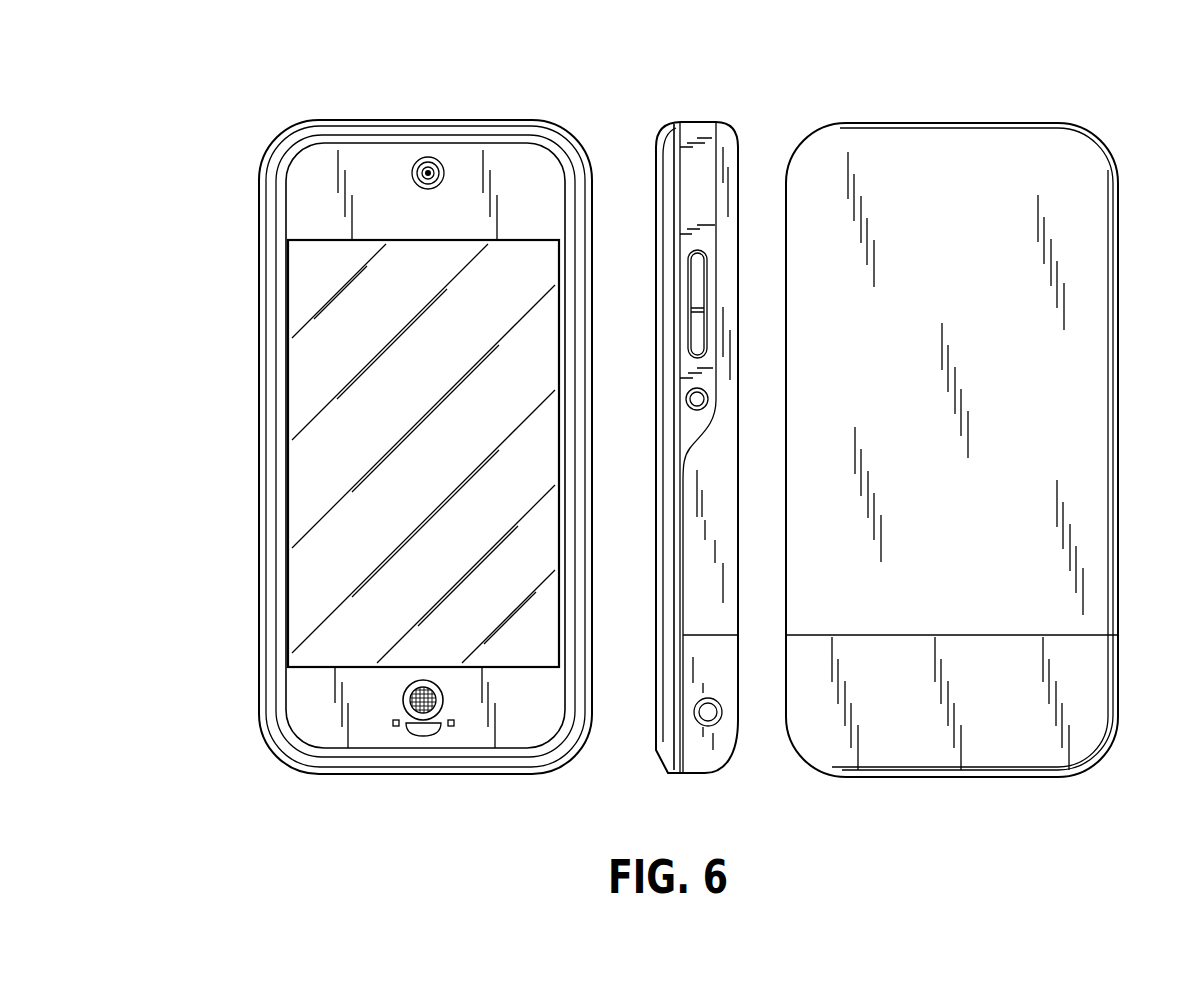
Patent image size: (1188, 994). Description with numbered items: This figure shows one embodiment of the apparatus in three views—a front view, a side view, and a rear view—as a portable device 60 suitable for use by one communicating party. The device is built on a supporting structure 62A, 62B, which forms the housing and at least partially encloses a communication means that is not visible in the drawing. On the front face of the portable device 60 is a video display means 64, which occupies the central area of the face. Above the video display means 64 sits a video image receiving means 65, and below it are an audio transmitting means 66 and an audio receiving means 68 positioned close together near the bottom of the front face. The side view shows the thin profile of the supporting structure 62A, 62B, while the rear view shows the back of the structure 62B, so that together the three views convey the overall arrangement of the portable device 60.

The portable device 60 is at (420, 96).
The supporting structure 62A is at (300, 190).
The supporting structure 62B is at (731, 153).
The video display means 64 is at (310, 383).
The video image receiving means 65 is at (431, 166).
The audio transmitting means 66 is at (437, 706).
The audio receiving means 68 is at (420, 736).